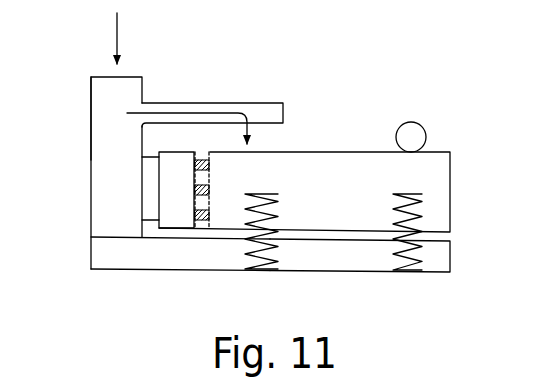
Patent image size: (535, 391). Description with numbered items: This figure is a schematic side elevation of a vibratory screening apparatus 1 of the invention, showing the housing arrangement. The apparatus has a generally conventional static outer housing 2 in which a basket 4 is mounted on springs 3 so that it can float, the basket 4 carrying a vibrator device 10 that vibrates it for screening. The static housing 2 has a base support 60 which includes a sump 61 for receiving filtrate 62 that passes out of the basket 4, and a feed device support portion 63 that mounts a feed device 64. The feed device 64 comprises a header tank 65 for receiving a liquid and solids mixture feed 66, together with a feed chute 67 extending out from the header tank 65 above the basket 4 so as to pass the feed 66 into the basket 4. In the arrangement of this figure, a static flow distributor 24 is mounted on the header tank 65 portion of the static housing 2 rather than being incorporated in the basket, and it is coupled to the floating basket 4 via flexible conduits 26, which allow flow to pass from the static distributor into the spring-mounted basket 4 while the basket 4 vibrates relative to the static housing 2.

The vibratory screening apparatus 1 is at (90, 160).
The static outer housing 2 is at (251, 278).
The springs 3 is at (413, 272).
The basket 4 is at (440, 152).
The vibrator device 10 is at (417, 123).
The static flow distributor 24 is at (177, 220).
The flexible conduits 26 is at (203, 225).
The base support 60 is at (275, 275).
The sump 61 is at (338, 263).
The filtrate 62 is at (332, 238).
The feed device support portion 63 is at (90, 252).
The feed device 64 is at (107, 186).
The header tank 65 is at (102, 138).
The liquid and solids mixture feed 66 is at (182, 113).
The feed chute 67 is at (202, 103).